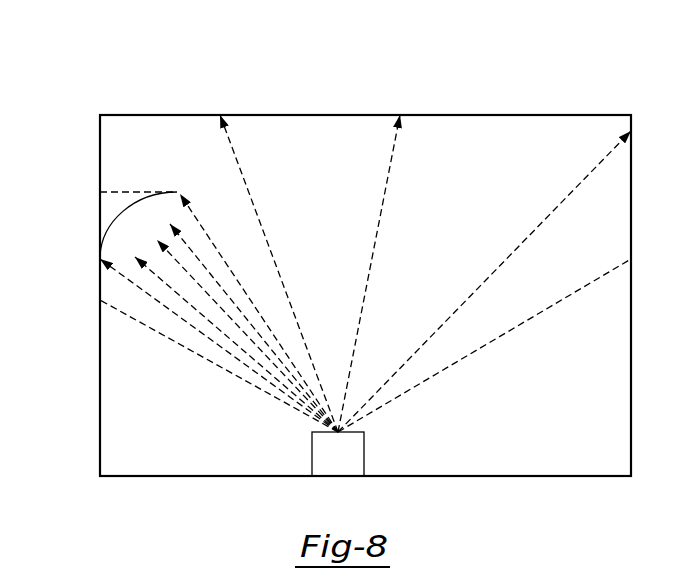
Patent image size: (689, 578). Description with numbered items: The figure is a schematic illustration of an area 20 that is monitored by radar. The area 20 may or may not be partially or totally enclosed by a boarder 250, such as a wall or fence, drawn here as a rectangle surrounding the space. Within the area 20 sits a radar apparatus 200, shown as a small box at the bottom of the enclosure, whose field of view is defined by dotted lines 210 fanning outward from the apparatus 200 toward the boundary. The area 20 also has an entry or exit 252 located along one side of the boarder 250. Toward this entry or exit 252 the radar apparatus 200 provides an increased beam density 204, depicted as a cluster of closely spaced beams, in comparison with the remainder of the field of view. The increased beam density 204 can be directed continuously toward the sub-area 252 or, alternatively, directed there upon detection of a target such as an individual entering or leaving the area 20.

The area 20 is at (396, 97).
The radar apparatus 200 is at (350, 457).
The increased beam density 204 is at (247, 335).
The dotted lines 210 is at (176, 345).
The boarder 250 is at (98, 124).
The entry or exit 252 is at (98, 213).